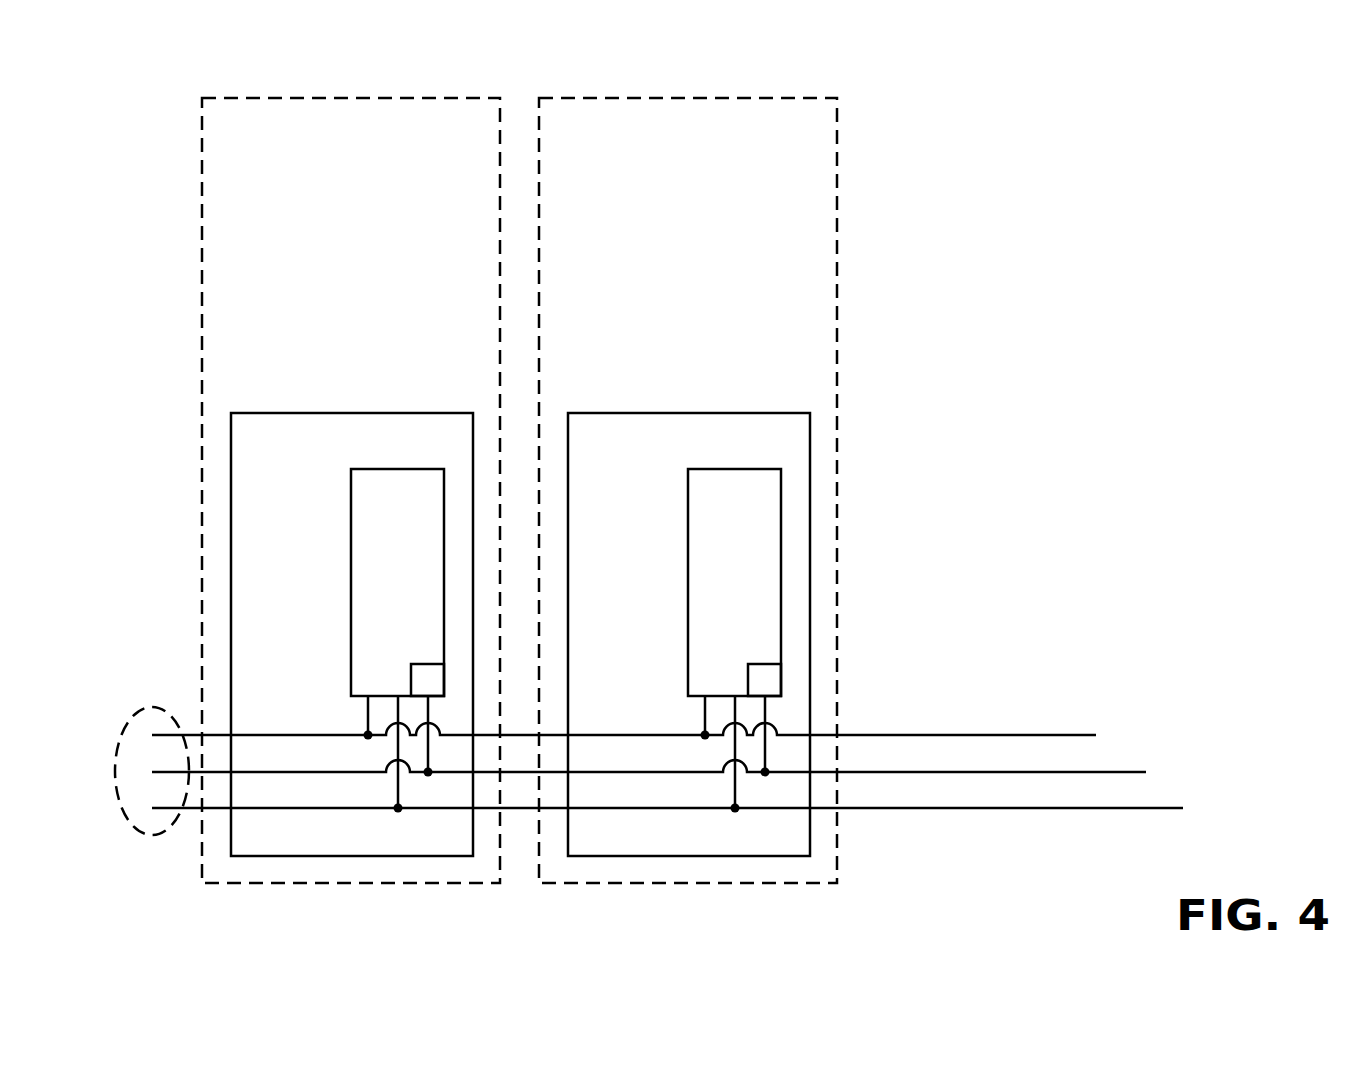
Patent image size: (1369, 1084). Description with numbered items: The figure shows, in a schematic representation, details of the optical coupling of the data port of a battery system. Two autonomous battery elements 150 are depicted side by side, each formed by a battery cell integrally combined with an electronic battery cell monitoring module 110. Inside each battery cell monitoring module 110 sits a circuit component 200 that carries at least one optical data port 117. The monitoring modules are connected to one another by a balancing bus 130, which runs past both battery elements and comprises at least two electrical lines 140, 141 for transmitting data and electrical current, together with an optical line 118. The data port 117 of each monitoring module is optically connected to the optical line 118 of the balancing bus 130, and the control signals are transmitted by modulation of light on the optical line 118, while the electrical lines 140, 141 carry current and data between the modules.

The autonomous battery element 150 is at (235, 113).
The battery cell monitoring module 110 is at (434, 839).
The controller 200 is at (418, 537).
The optical data port 117 is at (418, 680).
The balancing bus 130 is at (127, 820).
The electrical line 140 is at (1038, 732).
The optical line 118 is at (1125, 767).
The electrical line 141 is at (1124, 810).